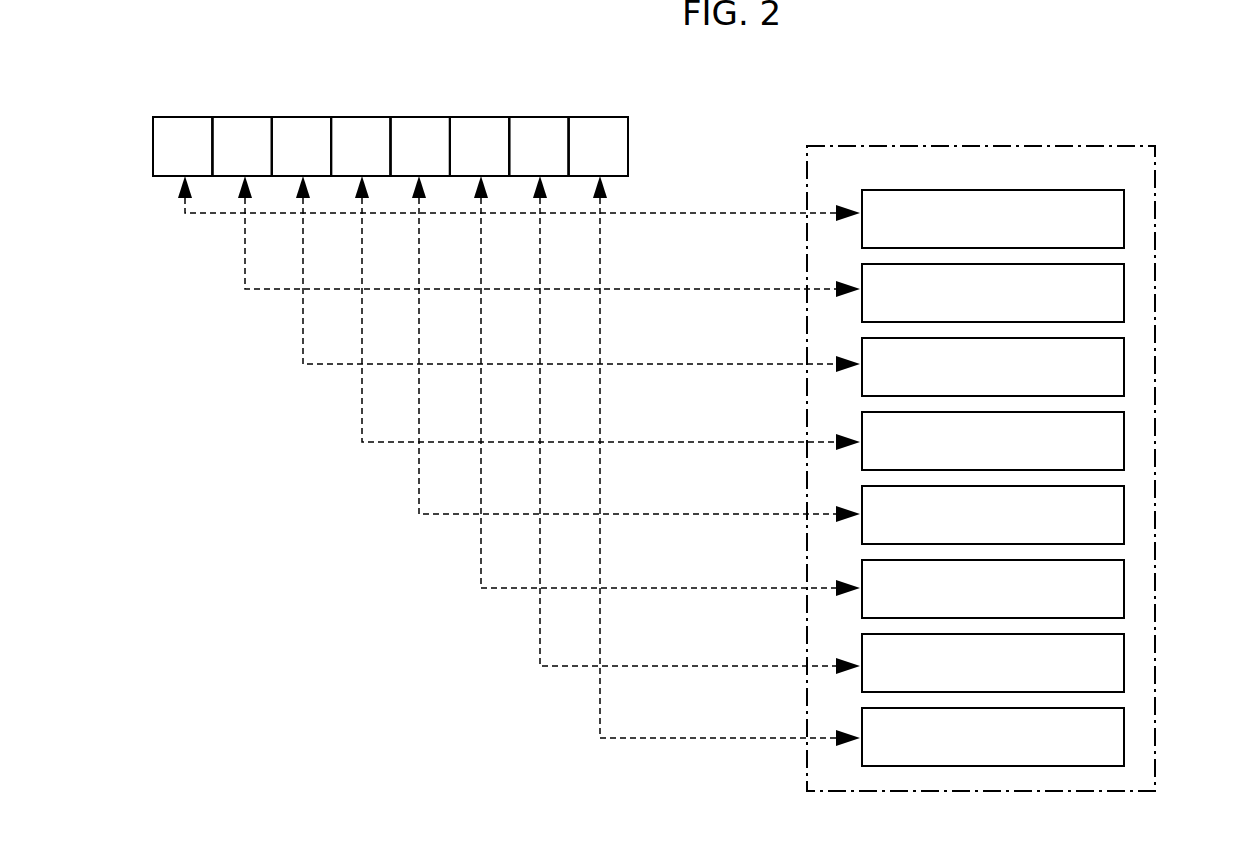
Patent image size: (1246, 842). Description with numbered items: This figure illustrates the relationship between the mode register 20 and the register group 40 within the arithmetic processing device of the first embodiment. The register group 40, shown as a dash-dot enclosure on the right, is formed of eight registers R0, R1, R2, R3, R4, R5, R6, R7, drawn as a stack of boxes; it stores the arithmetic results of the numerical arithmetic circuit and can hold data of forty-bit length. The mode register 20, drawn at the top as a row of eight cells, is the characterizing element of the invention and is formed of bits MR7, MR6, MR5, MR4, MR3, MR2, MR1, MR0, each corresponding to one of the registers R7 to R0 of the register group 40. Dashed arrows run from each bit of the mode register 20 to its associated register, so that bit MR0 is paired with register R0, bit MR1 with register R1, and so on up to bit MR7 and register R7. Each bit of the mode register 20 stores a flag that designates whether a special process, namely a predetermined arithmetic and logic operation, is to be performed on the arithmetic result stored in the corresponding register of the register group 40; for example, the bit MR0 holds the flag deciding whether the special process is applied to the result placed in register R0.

The mode register 20 is at (664, 123).
The register group 40 is at (1007, 145).
The bit MR0 of the mode register MR0 is at (593, 117).
The bit MR1 of the mode register MR1 is at (545, 117).
The bit MR2 of the mode register MR2 is at (480, 117).
The bit MR3 of the mode register MR3 is at (428, 117).
The bit MR4 of the mode register MR4 is at (367, 117).
The bit MR5 of the mode register MR5 is at (310, 117).
The bit MR6 of the mode register MR6 is at (250, 117).
The bit MR7 of the mode register MR7 is at (190, 117).
The register R0 is at (1124, 726).
The register R1 is at (1124, 652).
The register R2 is at (1124, 578).
The register R3 is at (1124, 504).
The register R4 is at (1124, 430).
The register R5 is at (1124, 356).
The register R6 is at (1124, 282).
The register R7 is at (1124, 208).